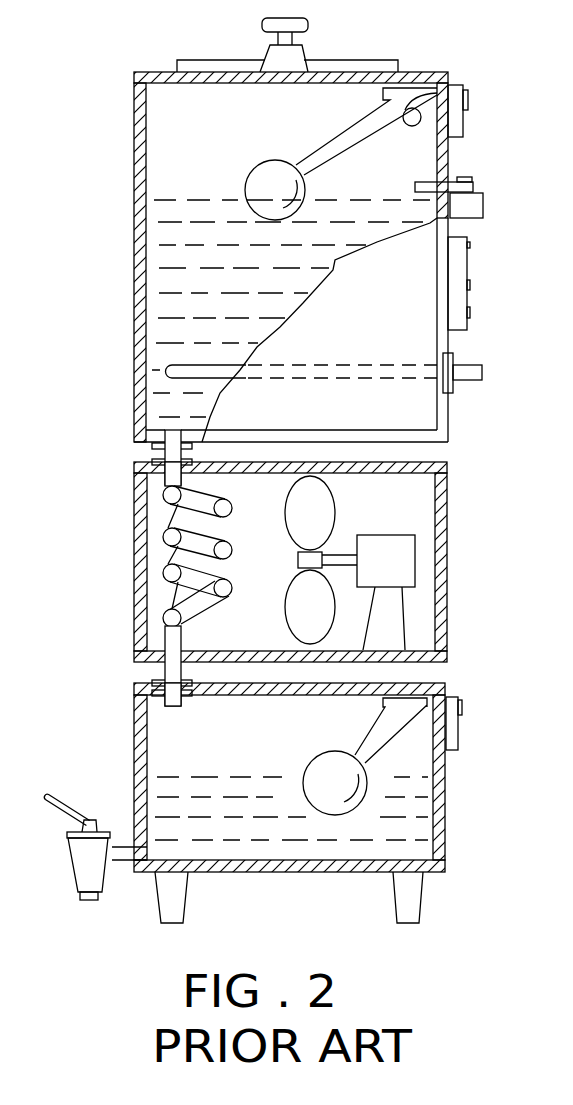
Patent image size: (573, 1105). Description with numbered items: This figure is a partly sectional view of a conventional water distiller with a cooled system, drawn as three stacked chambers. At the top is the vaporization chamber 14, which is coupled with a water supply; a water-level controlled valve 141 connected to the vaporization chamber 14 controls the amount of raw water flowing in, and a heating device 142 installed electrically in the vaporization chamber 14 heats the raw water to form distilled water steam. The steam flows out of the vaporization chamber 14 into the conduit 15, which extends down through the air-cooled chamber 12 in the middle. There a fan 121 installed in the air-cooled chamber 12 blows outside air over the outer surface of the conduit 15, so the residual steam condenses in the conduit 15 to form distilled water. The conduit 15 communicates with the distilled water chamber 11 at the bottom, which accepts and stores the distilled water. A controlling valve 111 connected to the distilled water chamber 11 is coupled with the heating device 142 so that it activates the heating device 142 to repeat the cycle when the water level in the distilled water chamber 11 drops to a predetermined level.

The distilled water chamber 11 is at (158, 740).
The controlling valve 111 is at (332, 767).
The air-cooled chamber 12 is at (155, 510).
The fan 121 is at (330, 515).
The vaporization chamber 14 is at (158, 165).
The water-level controlled valve 141 is at (268, 173).
The heating device 142 is at (160, 361).
The conduit 15 is at (163, 535).